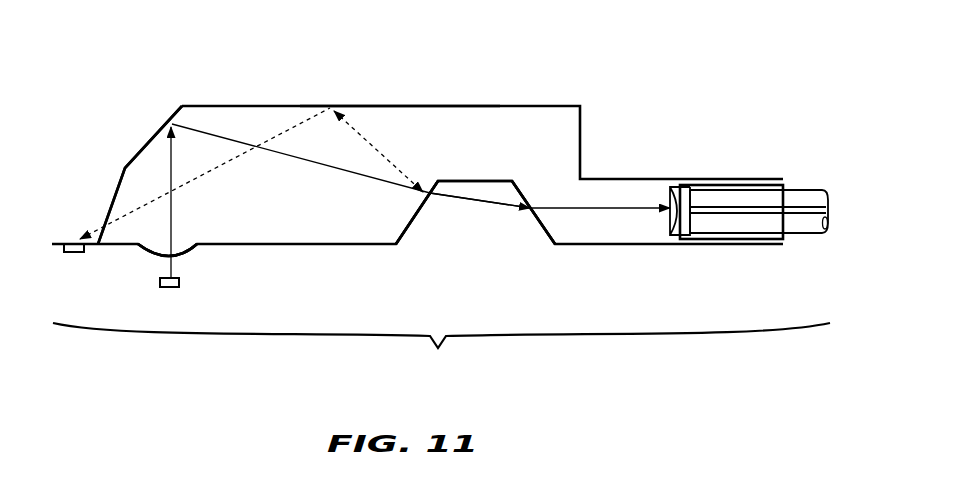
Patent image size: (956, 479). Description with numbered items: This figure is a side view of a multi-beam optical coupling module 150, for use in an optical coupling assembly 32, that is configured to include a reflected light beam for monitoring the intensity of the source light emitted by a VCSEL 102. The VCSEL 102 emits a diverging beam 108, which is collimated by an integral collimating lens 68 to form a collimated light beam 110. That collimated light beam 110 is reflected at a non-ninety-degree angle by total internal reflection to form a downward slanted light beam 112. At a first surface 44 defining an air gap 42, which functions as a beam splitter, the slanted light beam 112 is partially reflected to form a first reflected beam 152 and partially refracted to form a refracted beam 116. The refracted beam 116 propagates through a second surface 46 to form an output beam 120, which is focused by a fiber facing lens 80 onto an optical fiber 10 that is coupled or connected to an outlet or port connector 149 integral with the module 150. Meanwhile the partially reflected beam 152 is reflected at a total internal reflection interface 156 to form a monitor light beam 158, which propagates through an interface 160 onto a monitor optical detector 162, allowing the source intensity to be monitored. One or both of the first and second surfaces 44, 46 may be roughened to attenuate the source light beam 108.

The optical fiber 10 is at (740, 214).
The optical coupling assembly 32 is at (441, 353).
The air gap 42 is at (470, 248).
The first surface 44 is at (403, 230).
The second surface 46 is at (519, 188).
The collimating lens 68 is at (188, 258).
The fiber facing lens 80 is at (681, 184).
The VCSEL 102 is at (158, 283).
The diverging beam 108 is at (166, 257).
The collimated light beam 110 is at (175, 215).
The downward slanted light beam 112 is at (348, 175).
The refracted beam 116 is at (502, 217).
The output beam 120 is at (603, 208).
The port connector 149 is at (743, 176).
The multi-beam optical coupling module 150 is at (532, 72).
The first reflected beam 152 is at (403, 160).
The total internal reflection interface 156 is at (392, 106).
The monitor light beam 158 is at (308, 120).
The interface 160 is at (118, 188).
The monitor optical detector 162 is at (68, 254).